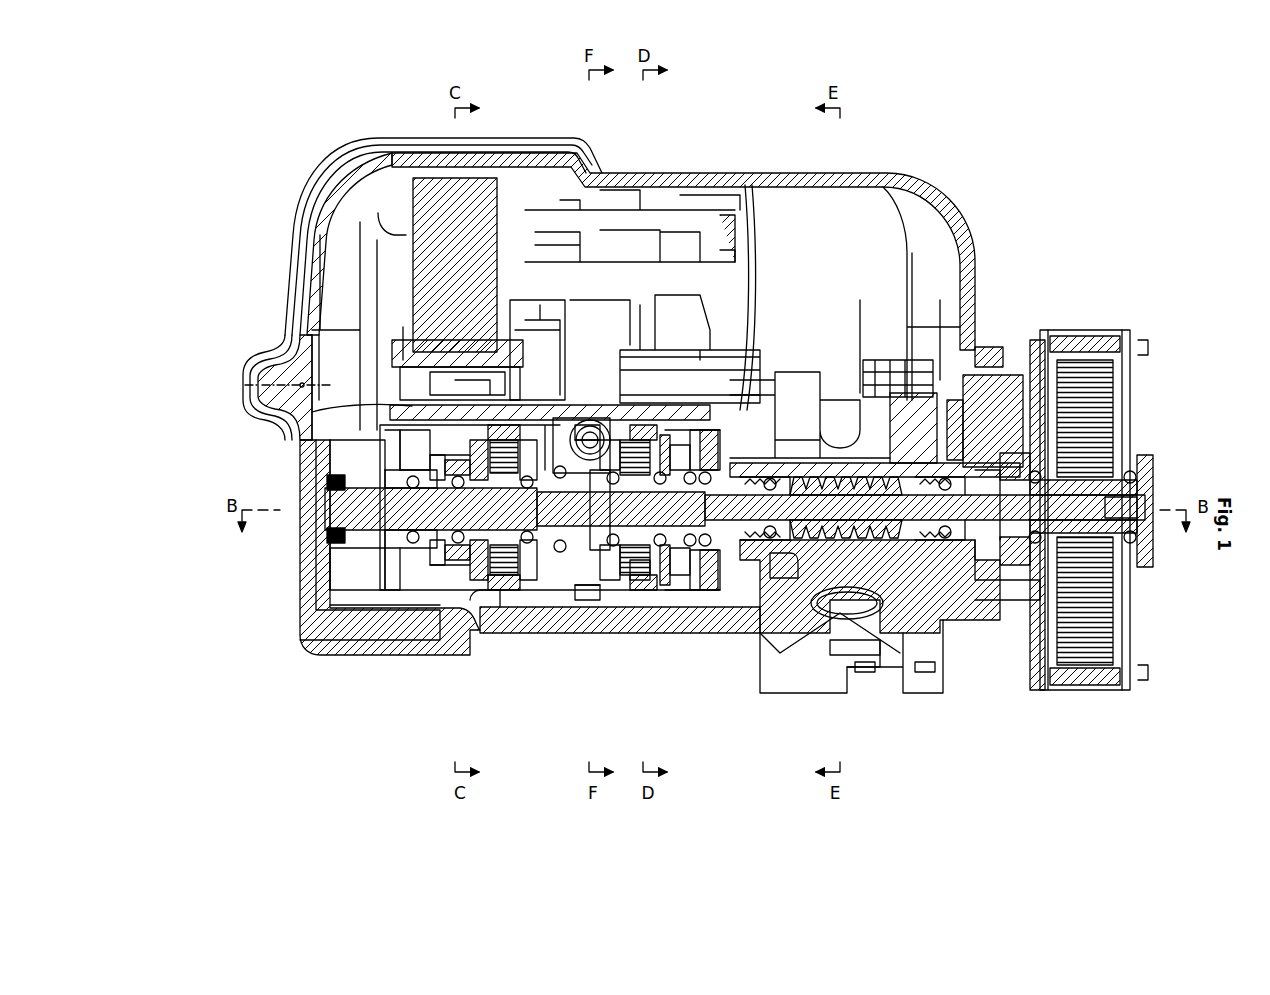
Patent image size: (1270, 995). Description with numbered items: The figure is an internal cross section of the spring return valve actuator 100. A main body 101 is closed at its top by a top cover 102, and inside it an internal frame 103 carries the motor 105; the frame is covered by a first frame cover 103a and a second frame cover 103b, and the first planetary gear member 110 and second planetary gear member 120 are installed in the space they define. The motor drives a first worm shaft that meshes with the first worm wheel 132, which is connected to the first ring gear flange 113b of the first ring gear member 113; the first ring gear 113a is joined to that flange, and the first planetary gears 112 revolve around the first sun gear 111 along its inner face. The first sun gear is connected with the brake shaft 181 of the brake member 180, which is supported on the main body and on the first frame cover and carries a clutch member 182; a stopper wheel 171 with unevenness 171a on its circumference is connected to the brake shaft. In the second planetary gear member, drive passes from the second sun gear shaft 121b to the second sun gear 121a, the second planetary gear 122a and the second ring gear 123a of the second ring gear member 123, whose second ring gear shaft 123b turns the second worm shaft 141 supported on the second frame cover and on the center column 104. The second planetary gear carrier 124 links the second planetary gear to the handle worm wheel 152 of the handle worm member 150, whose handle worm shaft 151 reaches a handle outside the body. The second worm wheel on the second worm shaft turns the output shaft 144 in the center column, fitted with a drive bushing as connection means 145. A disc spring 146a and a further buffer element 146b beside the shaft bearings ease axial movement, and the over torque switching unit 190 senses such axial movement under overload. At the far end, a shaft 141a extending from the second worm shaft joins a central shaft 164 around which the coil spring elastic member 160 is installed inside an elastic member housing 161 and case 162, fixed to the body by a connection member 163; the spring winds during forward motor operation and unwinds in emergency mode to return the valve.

The spring return valve actuator 100 is at (922, 98).
The main body 101 is at (300, 644).
The top cover 102 is at (702, 174).
The internal frame 103 is at (300, 346).
The first frame cover 103a is at (338, 411).
The second frame cover 103b is at (752, 186).
The center column 104 is at (876, 566).
The motor 105 is at (380, 213).
The first planetary gear member 110 is at (518, 589).
The first sun gear 111 is at (505, 584).
The first planetary gear 112 is at (533, 594).
The first ring gear member 113 is at (501, 705).
The first ring gear 113a is at (494, 567).
The first ring gear flange 113b is at (480, 565).
The second planetary gear member 120 is at (657, 589).
The second sun gear 121a is at (615, 583).
The second sun gear shaft 121b is at (572, 560).
The second planetary gear 122a is at (640, 583).
The second ring gear member 123 is at (670, 703).
The second ring gear 123a is at (676, 580).
The second ring gear shaft 123b is at (696, 567).
The second planetary gear carrier 124 is at (605, 540).
The first worm wheel 132 is at (448, 579).
The second worm shaft 141 is at (843, 640).
The shaft 141a is at (1072, 517).
The output shaft 144 is at (928, 646).
The connection means 145 is at (856, 661).
The disc spring 146a is at (773, 629).
The second support leg 146b is at (967, 533).
The handle worm member 150 is at (649, 114).
The handle worm shaft 151 is at (589, 425).
The handle worm wheel 152 is at (599, 439).
The elastic member 160 is at (1128, 388).
The elastic member housing 161 is at (1058, 334).
The case 162 is at (1108, 333).
The connection member 163 is at (1017, 446).
The central shaft 164 is at (1152, 456).
The stopper wheel 171 is at (398, 480).
The unevenness 171a is at (430, 451).
The brake member 180 is at (232, 544).
The brake shaft 181 is at (327, 511).
The clutch member 182 is at (342, 547).
The over torque switching unit 190 is at (977, 345).